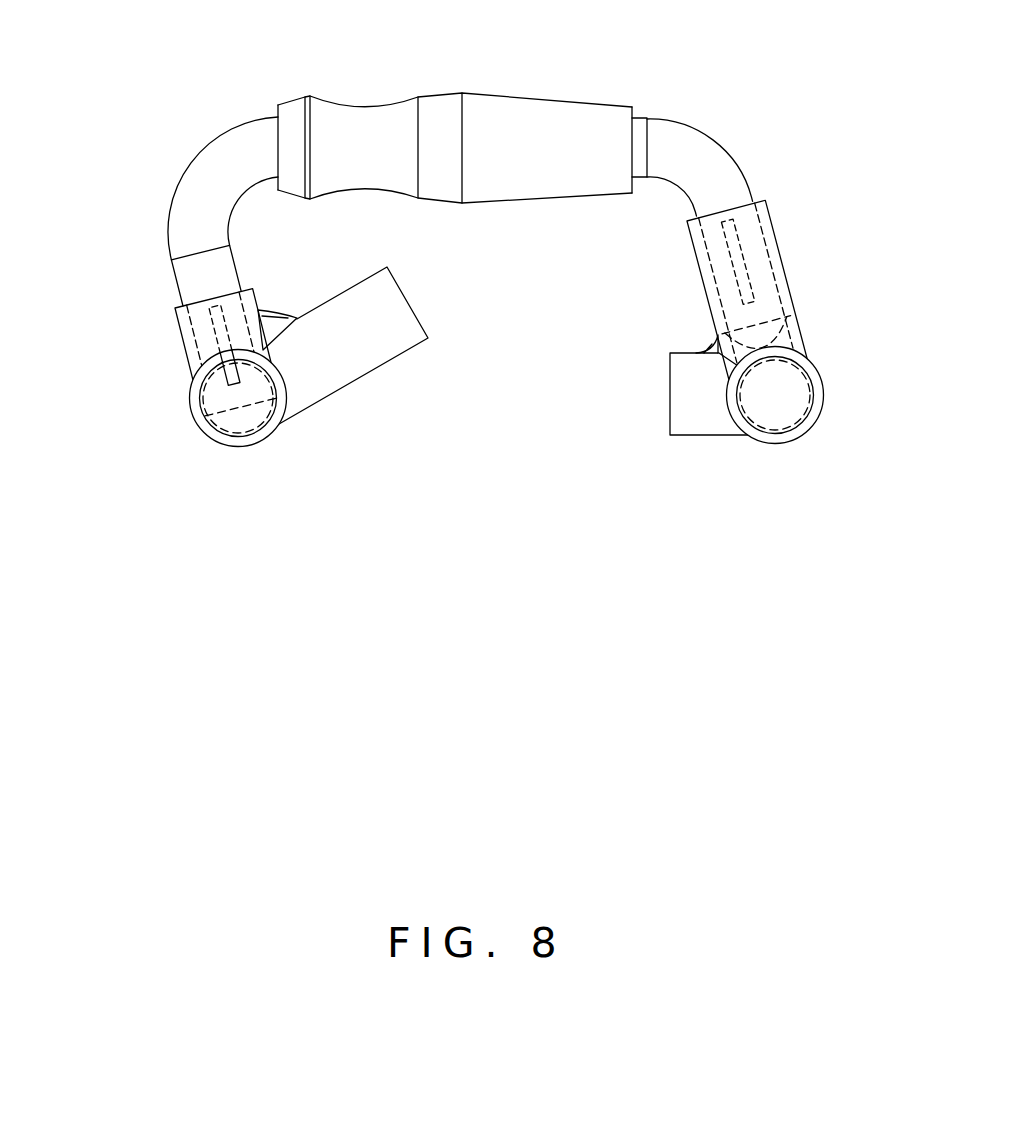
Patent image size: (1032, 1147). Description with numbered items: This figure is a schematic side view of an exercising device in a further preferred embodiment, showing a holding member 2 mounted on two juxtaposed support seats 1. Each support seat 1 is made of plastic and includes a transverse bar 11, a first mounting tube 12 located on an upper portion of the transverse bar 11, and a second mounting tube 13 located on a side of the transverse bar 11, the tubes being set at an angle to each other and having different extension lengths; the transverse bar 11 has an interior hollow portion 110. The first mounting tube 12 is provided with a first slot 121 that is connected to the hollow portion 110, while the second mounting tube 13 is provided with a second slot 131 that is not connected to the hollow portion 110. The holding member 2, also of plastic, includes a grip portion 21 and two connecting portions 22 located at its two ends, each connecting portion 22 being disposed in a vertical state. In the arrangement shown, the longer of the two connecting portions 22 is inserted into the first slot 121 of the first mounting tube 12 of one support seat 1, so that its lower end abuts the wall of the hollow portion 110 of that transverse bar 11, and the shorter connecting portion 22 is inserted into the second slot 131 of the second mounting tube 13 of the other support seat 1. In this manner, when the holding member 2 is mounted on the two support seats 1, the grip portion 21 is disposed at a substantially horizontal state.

The support seat 1 is at (173, 312).
The holding member 2 is at (187, 147).
The grip portion 21 is at (640, 127).
The connecting portion 22 is at (228, 356).
The transverse bar 11 is at (202, 420).
The hollow portion 110 is at (238, 398).
The first mounting tube 12 is at (203, 360).
The first slot 121 is at (205, 330).
The second mounting tube 13 is at (785, 295).
The second slot 131 is at (760, 263).